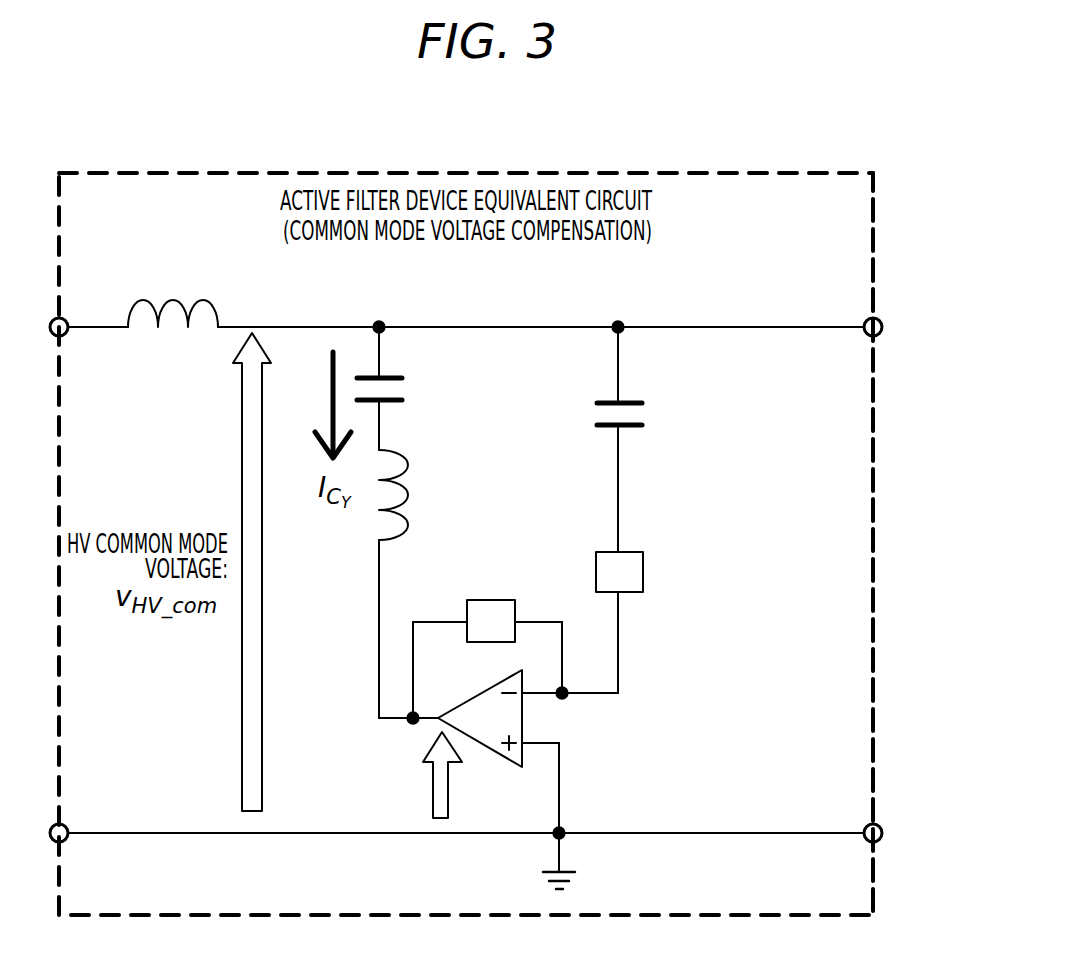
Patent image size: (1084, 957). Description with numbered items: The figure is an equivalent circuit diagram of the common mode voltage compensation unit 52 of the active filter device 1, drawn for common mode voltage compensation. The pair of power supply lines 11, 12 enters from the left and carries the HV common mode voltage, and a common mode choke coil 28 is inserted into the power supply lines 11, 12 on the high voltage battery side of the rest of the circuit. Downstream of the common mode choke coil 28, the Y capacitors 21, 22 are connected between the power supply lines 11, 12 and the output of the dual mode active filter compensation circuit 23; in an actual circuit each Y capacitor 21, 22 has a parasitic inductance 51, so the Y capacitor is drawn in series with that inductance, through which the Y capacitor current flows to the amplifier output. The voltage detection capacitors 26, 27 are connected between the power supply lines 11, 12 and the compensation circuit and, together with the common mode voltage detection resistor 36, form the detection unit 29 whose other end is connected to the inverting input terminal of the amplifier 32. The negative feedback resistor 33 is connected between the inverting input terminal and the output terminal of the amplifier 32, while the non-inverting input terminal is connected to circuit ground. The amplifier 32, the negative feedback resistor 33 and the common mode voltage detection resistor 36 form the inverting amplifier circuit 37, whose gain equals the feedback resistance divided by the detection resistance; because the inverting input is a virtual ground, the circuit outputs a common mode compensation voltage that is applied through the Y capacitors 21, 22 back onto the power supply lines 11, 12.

The active filter device 1 is at (681, 170).
The common mode voltage compensation unit 52 is at (880, 222).
The power supply line 11 is at (466, 536).
The power supply line 12 is at (263, 325).
The common mode choke coil 28 is at (163, 298).
The Y capacitor 21 is at (406, 362).
The Y capacitor 22 is at (365, 376).
The parasitic inductance 51 is at (378, 514).
The voltage detection capacitor 26 is at (698, 413).
The voltage detection capacitor 27 is at (598, 400).
The detection unit 29 is at (672, 348).
The common mode voltage detection resistor 36 is at (633, 552).
The negative feedback resistor 33 is at (467, 612).
The amplifier 32 is at (473, 696).
The dual mode active filter compensation circuit 23 is at (778, 728).
The inverting amplifier circuit 37 is at (484, 766).